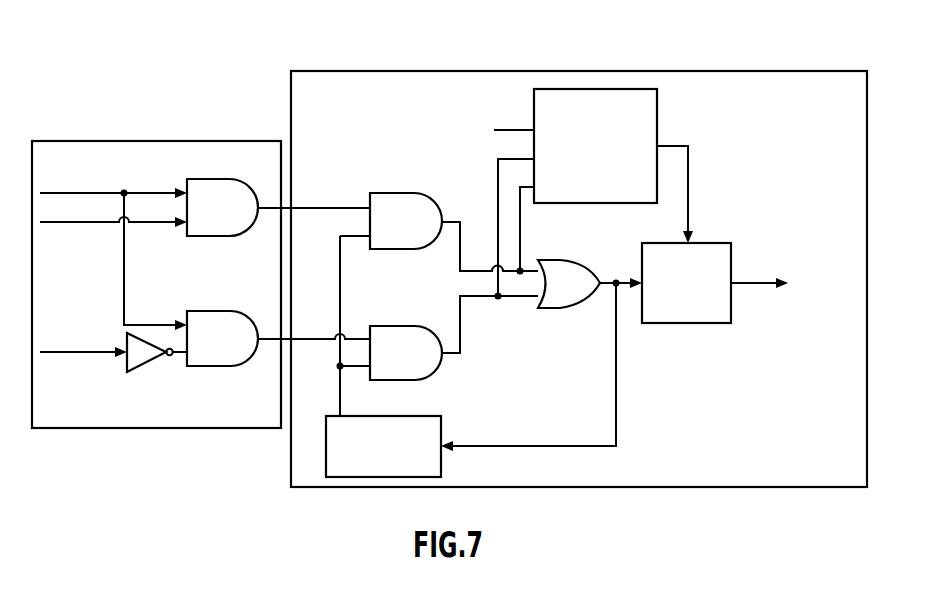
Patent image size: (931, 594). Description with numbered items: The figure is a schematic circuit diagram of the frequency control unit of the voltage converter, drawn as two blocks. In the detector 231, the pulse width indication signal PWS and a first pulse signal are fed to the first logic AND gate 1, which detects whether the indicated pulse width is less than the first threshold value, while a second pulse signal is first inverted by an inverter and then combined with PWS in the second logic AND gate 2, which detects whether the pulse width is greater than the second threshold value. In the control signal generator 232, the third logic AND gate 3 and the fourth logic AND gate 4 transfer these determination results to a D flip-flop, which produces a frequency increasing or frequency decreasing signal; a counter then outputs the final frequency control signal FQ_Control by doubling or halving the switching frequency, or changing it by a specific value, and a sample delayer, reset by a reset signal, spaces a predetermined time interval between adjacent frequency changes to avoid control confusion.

The detector 231 is at (126, 141).
The control signal generator 232 is at (501, 71).
The logic AND gate AND1 1 is at (222, 207).
The logic AND gate AND2 2 is at (222, 338).
The logic AND gate AND3 3 is at (406, 221).
The logic AND gate AND4 4 is at (406, 353).